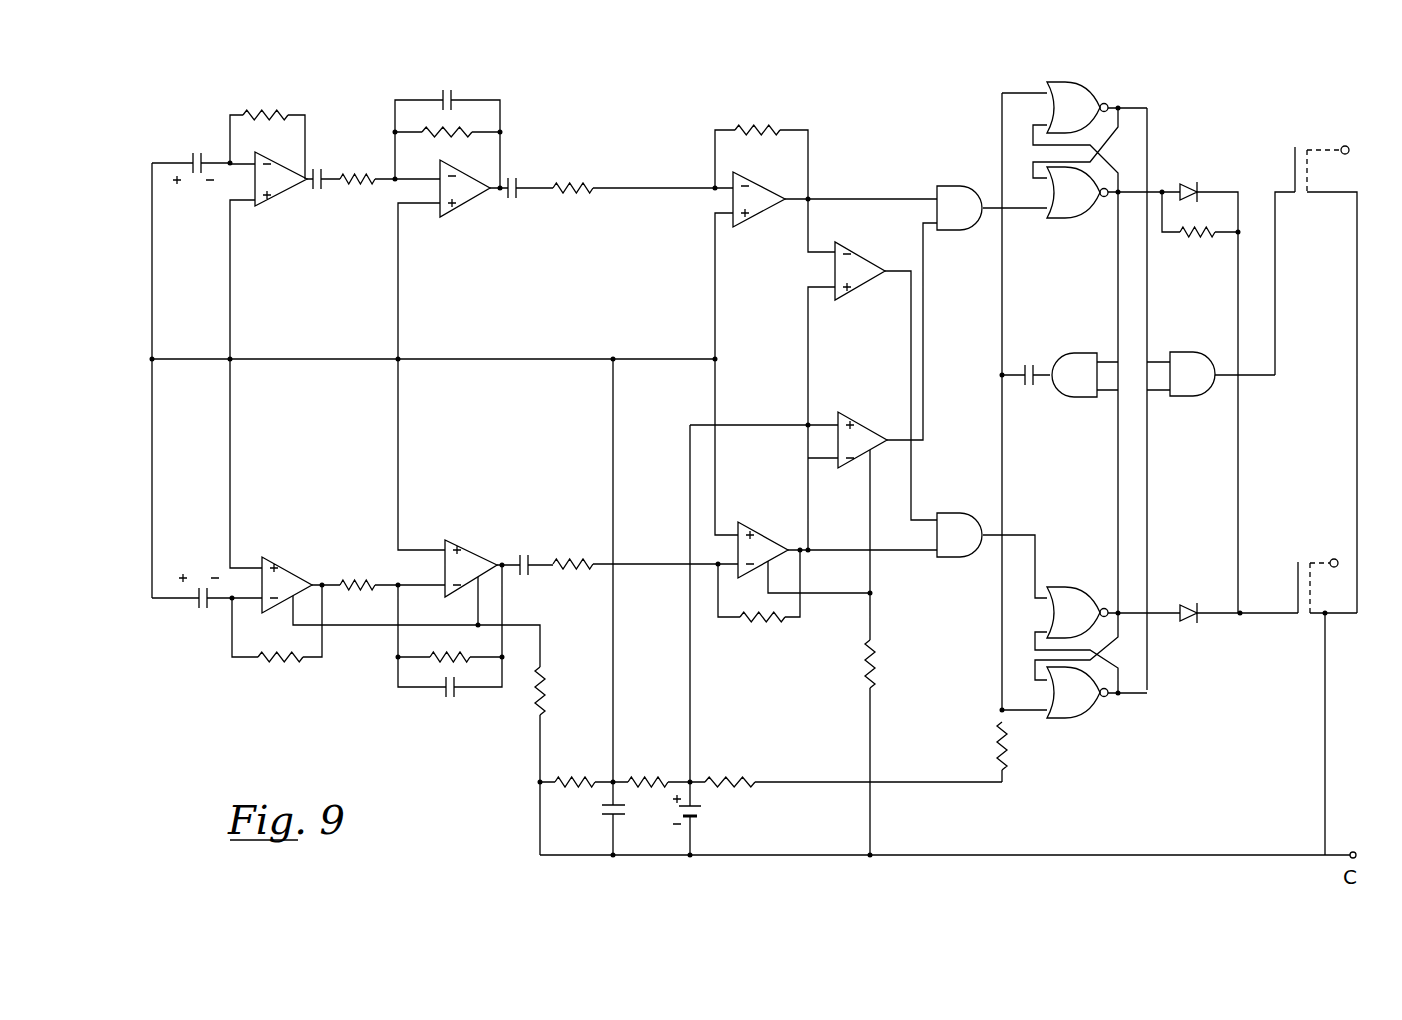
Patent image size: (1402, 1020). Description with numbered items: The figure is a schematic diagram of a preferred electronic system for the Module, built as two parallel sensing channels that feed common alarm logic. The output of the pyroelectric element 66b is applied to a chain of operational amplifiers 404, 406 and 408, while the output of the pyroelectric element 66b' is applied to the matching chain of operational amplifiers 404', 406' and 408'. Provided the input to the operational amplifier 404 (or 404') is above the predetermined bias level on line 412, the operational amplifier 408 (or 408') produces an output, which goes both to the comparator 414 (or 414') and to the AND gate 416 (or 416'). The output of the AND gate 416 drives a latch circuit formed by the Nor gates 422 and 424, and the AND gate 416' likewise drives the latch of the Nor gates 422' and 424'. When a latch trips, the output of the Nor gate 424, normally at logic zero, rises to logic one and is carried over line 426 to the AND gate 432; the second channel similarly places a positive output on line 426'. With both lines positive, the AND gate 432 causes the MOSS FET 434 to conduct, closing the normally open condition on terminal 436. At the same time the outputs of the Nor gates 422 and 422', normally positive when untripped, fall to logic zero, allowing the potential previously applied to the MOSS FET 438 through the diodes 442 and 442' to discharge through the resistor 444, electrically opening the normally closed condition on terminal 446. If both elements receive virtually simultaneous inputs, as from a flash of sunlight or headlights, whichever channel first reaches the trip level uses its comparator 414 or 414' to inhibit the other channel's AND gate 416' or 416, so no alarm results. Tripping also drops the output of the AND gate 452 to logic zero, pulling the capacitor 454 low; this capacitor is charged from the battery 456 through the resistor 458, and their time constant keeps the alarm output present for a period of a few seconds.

The pyroelectric element 66b is at (198, 130).
The operational amplifier 404 is at (281, 200).
The operational amplifier 406 is at (470, 208).
The line 412 is at (230, 290).
The operational amplifier 408 is at (759, 215).
The comparator 414 is at (861, 258).
The AND gate 416 is at (959, 187).
The Nor gate 424 is at (1077, 85).
The Nor gate 422 is at (1074, 212).
The line 426 is at (1179, 252).
The diode 442 is at (1215, 174).
The resistor 444 is at (1208, 237).
The MOSS FET 434 is at (1295, 163).
The terminal 436 is at (1349, 154).
The capacitor 454 is at (1028, 364).
The AND gate 452 is at (1060, 398).
The AND gate 432 is at (1190, 362).
The comparator 414' is at (867, 423).
The operational amplifier 408' is at (763, 532).
The AND gate 416' is at (959, 514).
The Nor gate 422' is at (1077, 584).
The Nor gate 424' is at (1077, 719).
The line 426' is at (1176, 545).
The diode 442' is at (1203, 638).
The MOSS FET 438 is at (1298, 582).
The terminal 446 is at (1312, 566).
The operational amplifier 404' is at (292, 561).
The operational amplifier 406' is at (486, 549).
The pyroelectric element 66b' is at (198, 635).
The battery 456 is at (700, 818).
The resistor 458 is at (1010, 766).